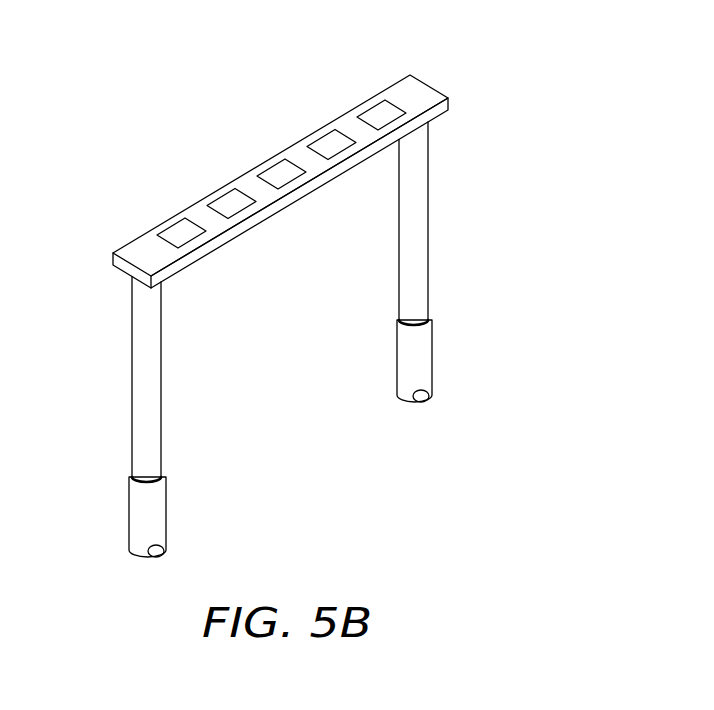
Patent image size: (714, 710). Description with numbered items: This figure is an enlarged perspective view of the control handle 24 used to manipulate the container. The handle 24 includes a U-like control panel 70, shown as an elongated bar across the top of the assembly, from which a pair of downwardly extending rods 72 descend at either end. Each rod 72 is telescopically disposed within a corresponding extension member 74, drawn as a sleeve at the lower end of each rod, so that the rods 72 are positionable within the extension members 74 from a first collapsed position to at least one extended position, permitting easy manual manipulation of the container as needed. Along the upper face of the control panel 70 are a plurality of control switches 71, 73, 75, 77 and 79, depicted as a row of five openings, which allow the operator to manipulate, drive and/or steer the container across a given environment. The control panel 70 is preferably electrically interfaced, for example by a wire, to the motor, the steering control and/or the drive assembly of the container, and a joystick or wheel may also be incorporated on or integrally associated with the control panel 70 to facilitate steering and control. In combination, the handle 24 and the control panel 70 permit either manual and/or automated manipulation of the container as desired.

The handle 24 is at (443, 200).
The control panel 70 is at (413, 87).
The control switch 71 is at (182, 233).
The control switch 73 is at (227, 205).
The control switch 75 is at (273, 175).
The control switch 77 is at (323, 145).
The control switch 79 is at (380, 112).
The rod 72 is at (145, 368).
The extension member 74 is at (140, 523).